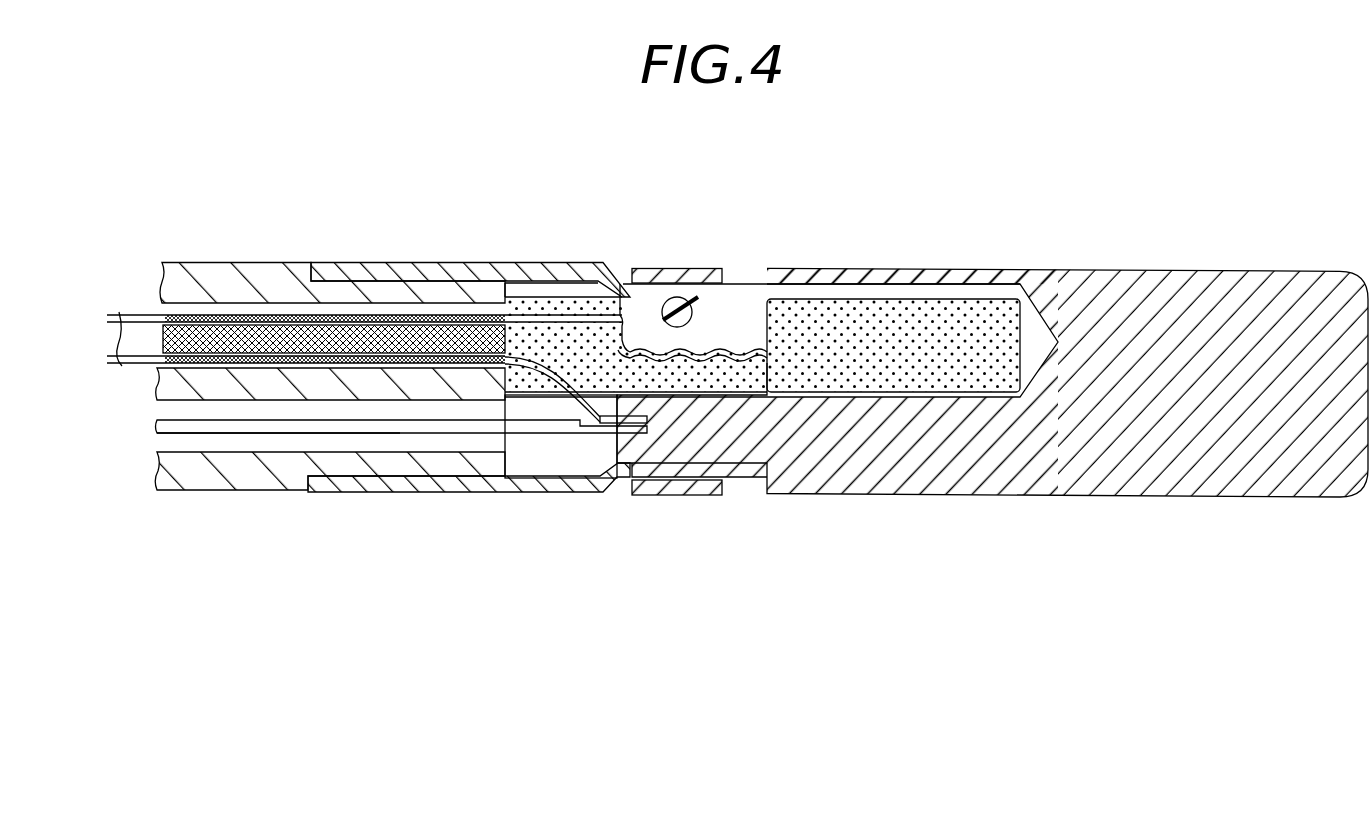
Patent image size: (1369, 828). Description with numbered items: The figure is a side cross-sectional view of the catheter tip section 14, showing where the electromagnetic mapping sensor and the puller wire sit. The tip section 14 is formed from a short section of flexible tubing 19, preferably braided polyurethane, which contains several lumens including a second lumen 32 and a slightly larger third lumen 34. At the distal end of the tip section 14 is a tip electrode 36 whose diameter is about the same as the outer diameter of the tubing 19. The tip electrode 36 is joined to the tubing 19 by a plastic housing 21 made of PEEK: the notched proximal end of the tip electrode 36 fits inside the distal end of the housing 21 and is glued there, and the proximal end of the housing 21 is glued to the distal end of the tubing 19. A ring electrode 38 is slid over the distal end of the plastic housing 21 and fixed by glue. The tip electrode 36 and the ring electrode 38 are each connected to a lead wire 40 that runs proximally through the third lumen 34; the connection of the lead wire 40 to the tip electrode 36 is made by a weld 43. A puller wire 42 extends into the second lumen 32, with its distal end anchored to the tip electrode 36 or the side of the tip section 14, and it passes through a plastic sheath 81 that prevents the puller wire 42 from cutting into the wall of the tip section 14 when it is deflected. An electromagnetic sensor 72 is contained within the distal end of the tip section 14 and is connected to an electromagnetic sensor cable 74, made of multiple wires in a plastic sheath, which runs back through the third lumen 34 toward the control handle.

The tip section 14 is at (1028, 228).
The tubing 19 is at (205, 273).
The plastic housing 21 is at (515, 273).
The second lumen 32 is at (173, 407).
The third lumen 34 is at (200, 308).
The tip electrode 36 is at (965, 276).
The ring electrode 38 is at (648, 272).
The lead wire 40 is at (140, 322).
The puller wire 42 is at (580, 438).
The weld 43 is at (612, 434).
The electromagnetic sensor 72 is at (834, 337).
The electromagnetic sensor cable 74 is at (376, 335).
The sheath 81 is at (160, 434).